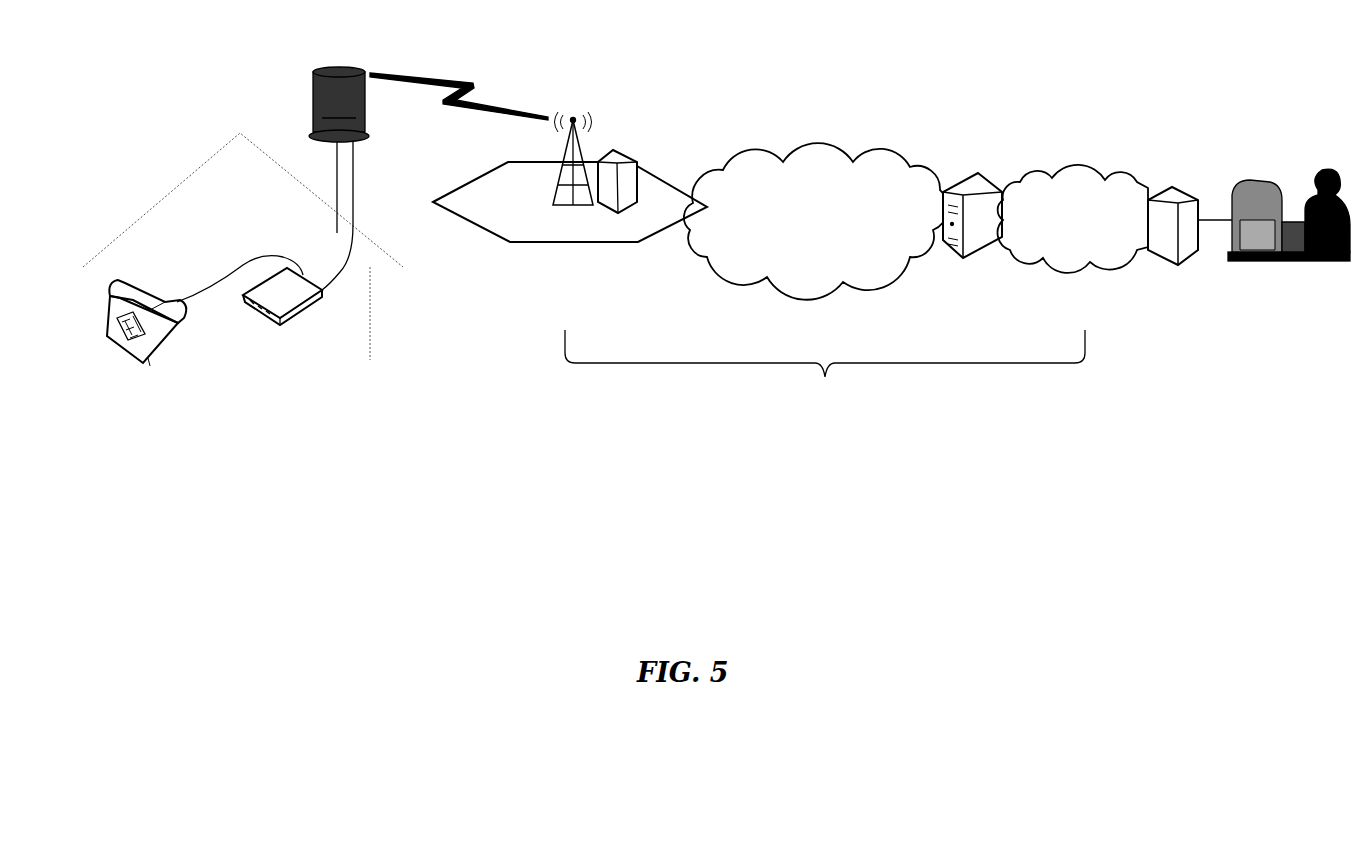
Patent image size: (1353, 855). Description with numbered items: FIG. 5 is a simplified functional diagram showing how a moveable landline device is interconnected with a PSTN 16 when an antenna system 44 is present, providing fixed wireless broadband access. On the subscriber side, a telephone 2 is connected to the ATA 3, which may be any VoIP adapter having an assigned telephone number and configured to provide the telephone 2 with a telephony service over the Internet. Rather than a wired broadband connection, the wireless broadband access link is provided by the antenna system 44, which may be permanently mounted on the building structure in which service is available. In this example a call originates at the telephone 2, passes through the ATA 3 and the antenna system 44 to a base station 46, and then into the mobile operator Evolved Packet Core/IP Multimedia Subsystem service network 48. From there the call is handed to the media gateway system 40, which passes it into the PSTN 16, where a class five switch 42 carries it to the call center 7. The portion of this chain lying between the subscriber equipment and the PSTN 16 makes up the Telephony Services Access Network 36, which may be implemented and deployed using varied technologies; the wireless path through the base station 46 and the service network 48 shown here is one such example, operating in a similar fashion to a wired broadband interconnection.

The antenna system 44 is at (352, 46).
The telephone 2 is at (148, 358).
The ATA 3 is at (297, 317).
The base station 46 is at (570, 177).
The EPC/IMS service network 48 is at (816, 221).
The media gateway system 40 is at (972, 230).
The PSTN 16 is at (1073, 219).
The class 5 switch 42 is at (1173, 247).
The call center 7 is at (1289, 235).
The Telephony Services Access Network 36 is at (825, 372).